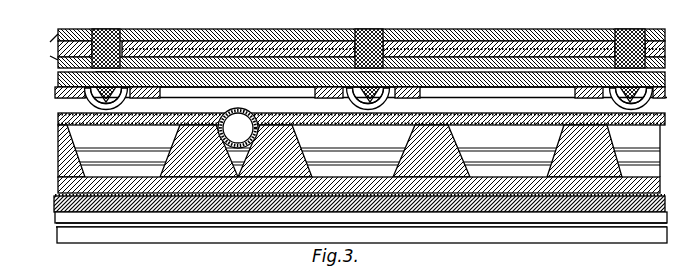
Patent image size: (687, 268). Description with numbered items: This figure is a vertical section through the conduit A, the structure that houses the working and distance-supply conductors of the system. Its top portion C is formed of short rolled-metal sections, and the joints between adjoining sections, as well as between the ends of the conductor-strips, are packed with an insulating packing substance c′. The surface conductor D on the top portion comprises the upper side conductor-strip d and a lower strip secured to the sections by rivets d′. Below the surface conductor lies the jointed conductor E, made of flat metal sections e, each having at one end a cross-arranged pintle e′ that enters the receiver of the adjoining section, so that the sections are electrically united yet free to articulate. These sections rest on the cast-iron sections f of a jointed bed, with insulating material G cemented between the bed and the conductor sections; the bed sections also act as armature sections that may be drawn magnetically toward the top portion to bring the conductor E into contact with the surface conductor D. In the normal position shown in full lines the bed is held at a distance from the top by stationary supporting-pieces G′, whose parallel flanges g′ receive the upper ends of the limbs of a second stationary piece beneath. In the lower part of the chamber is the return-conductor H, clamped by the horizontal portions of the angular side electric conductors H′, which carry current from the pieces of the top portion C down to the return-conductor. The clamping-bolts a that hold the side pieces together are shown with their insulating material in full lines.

The upper side conductor-strip d is at (361, 25).
The surface conductor D is at (46, 47).
The top portion C is at (490, 50).
The conduit A is at (361, 39).
The rivets d′ is at (104, 38).
The insulating packing substance c′ is at (604, 30).
The jointed conductor E is at (217, 76).
The sections of jointed conductor e is at (261, 78).
The sections of jointed bed f is at (361, 92).
The insulating material G is at (360, 91).
The pintle e′ is at (358, 94).
The stationary supporting-pieces G′ is at (669, 119).
The parallel flanges g′ is at (67, 128).
The bolts a is at (238, 128).
The return-conductor H is at (190, 194).
The side electric conductors H′ is at (243, 213).